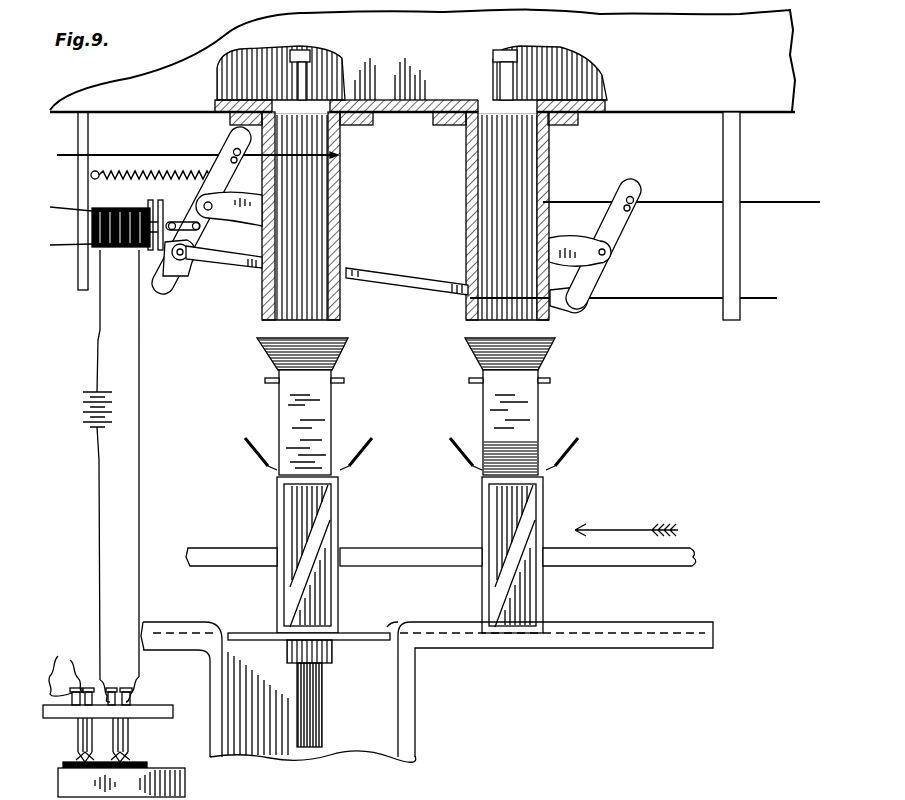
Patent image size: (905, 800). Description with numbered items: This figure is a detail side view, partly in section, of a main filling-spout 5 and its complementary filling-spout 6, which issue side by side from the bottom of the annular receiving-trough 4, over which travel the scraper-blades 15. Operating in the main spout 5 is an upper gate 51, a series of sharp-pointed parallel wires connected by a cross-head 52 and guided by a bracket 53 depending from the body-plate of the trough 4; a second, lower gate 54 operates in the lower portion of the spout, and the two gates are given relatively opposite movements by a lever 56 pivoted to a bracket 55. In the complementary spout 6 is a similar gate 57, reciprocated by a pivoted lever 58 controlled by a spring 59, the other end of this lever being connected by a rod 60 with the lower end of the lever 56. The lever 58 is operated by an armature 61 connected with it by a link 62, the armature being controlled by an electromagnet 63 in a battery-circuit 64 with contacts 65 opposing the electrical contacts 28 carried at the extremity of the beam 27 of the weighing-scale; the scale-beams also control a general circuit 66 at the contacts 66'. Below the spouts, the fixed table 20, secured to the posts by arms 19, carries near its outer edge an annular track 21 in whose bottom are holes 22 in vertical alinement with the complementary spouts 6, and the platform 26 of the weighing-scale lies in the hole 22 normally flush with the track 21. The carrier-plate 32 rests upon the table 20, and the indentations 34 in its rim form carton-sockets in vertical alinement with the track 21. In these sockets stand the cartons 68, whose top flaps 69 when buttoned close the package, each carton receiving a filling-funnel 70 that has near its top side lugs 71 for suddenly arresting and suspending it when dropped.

The annular receiving-trough 4 is at (260, 69).
The scraper-blades 15 is at (302, 80).
The main filling-spout 5 is at (503, 220).
The complementary filling-spout 6 is at (341, 221).
The gate 57 is at (150, 154).
The spring 59 is at (158, 186).
The pivoted lever 58 is at (201, 210).
The link 62 is at (207, 228).
The electromagnet 63 is at (130, 242).
The armature 61 is at (159, 253).
The rod 60 is at (217, 261).
The lower gate 54 is at (477, 300).
The upper gate 51 is at (587, 202).
The cross-head 52 is at (637, 202).
The bracket 55 is at (570, 257).
The lever 56 is at (622, 228).
The bracket 53 is at (730, 155).
The battery-circuit 64 is at (141, 373).
The filling-funnel 70 is at (468, 350).
The side lugs 71 is at (266, 380).
The top flaps 69 is at (264, 462).
The carton 68 is at (325, 518).
The indentations 34 is at (273, 550).
The carrier-plate 32 is at (415, 553).
The fixed table 20 is at (703, 642).
The holes 22 is at (388, 627).
The annular track 21 is at (524, 636).
The platform 26 is at (370, 641).
The arms 19 is at (172, 698).
The general circuit 66 is at (66, 666).
The contacts 66' is at (68, 735).
The contacts 65 is at (125, 728).
The electrical contacts 28 is at (77, 760).
The beam 27 is at (187, 782).